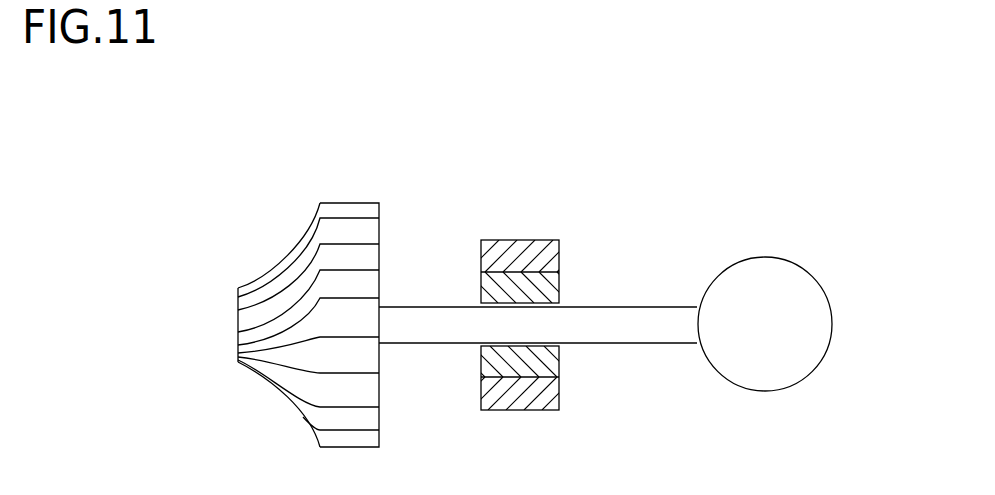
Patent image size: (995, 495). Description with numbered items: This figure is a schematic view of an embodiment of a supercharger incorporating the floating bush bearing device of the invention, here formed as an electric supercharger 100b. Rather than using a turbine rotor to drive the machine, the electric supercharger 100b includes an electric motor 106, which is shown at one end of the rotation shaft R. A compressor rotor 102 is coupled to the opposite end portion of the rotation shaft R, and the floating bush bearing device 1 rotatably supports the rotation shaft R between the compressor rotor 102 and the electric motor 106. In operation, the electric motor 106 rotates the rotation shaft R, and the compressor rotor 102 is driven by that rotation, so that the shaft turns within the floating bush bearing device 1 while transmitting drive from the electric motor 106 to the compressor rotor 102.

The electric supercharger 100b is at (249, 132).
The compressor rotor 102 is at (335, 203).
The floating bush bearing device 1 is at (514, 235).
The electric motor 106 is at (762, 258).
The rotation shaft R is at (629, 347).